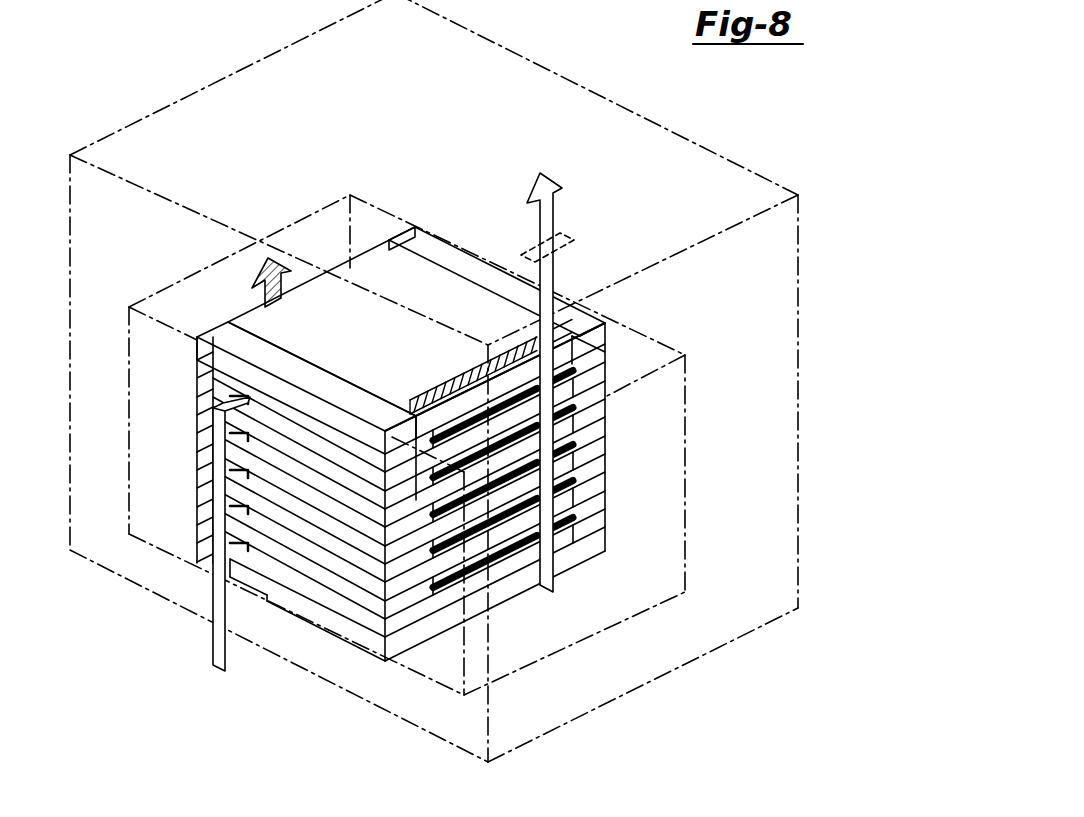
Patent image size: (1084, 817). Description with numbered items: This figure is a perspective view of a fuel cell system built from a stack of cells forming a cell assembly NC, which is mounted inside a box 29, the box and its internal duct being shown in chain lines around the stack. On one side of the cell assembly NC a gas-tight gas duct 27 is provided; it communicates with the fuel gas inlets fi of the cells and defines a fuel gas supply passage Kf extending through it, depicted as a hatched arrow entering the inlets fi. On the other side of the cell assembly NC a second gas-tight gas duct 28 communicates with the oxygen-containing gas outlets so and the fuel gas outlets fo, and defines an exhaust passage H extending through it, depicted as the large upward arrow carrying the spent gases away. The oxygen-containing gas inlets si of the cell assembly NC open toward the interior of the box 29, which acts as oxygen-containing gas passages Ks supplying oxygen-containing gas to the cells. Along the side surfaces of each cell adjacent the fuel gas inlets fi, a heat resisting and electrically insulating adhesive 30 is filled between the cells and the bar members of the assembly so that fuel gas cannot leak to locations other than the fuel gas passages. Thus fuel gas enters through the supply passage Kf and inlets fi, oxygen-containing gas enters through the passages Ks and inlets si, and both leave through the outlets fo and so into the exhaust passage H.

The gas duct 27 is at (138, 294).
The gas duct 28 is at (712, 403).
The box 29 is at (718, 155).
The heat resisting and electrically insulating adhesive 30 is at (388, 242).
The cell assembly NC is at (424, 294).
The exhaust passage H is at (555, 217).
The fuel gas inlets fi is at (320, 284).
The fuel gas outlets fo is at (439, 392).
The oxygen-containing gas inlets si is at (233, 387).
The oxygen-containing gas outlets so is at (484, 547).
The fuel gas supply passage Kf is at (256, 285).
The oxygen-containing gas passages Ks is at (200, 638).